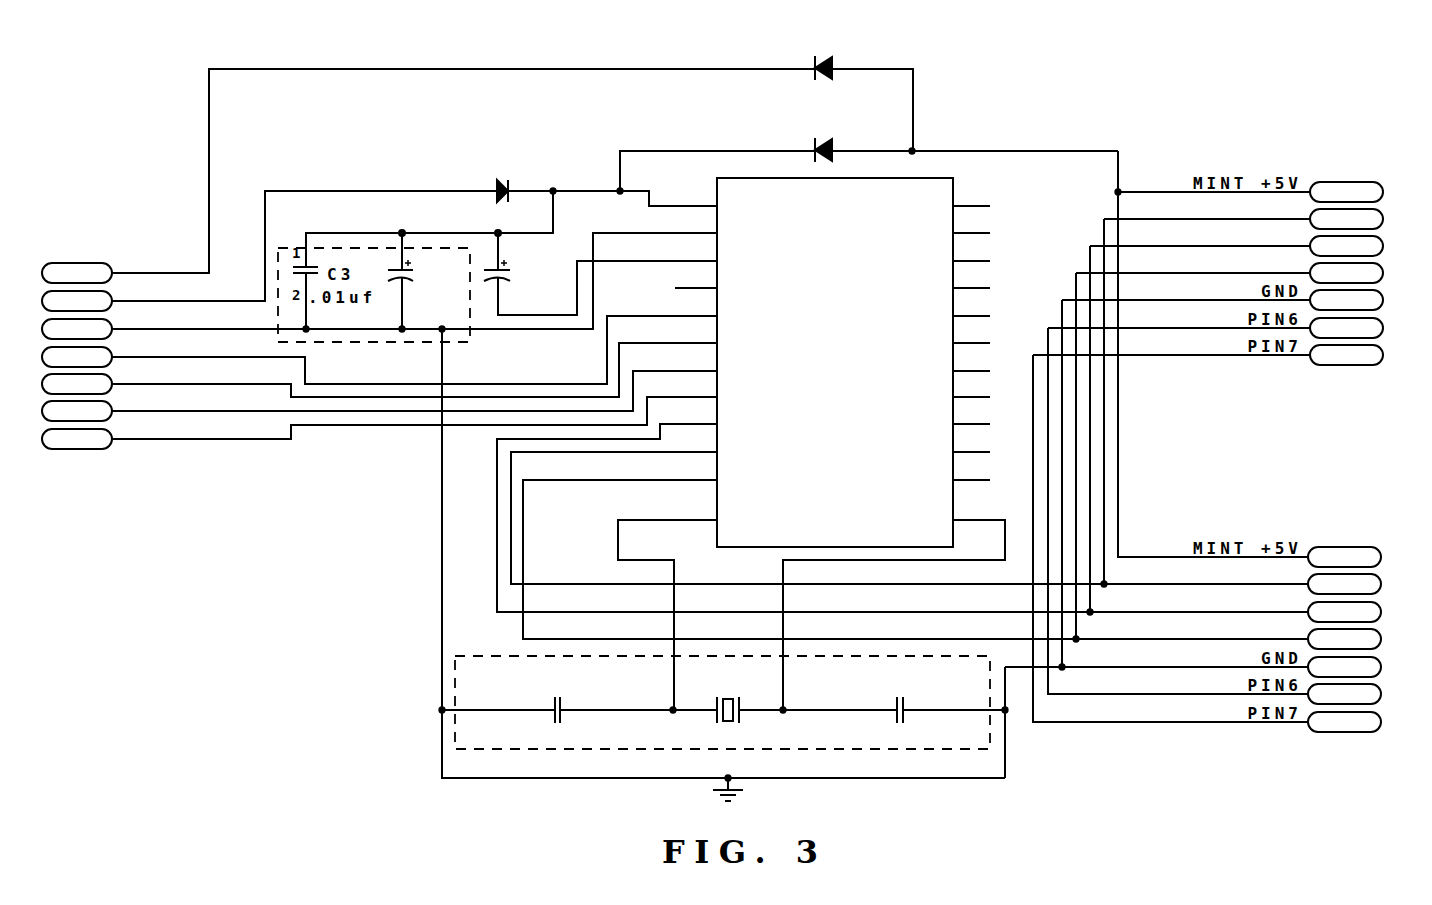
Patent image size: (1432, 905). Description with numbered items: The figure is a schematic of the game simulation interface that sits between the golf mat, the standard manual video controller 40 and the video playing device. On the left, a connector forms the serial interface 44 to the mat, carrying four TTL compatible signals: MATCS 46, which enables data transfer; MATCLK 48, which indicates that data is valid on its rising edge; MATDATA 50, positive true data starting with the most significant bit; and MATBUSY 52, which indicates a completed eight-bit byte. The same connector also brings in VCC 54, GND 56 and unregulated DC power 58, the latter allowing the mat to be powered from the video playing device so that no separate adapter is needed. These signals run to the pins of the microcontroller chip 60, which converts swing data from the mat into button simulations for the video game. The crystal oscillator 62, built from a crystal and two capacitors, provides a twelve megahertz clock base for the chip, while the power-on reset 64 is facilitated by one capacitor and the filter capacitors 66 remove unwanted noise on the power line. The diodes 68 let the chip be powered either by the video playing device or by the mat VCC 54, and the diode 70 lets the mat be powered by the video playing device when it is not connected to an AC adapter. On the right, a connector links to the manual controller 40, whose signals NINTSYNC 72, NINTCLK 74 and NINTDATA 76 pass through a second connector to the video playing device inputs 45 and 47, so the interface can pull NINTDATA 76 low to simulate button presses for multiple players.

The serial interface 44 is at (188, 362).
The unregulated DC power 58 is at (463, 171).
The VCC 54 is at (304, 246).
The GND 56 is at (558, 517).
The MATCS 46 is at (414, 350).
The MATCLK 48 is at (414, 370).
The MATDATA 50 is at (414, 391).
The MATBUSY 52 is at (414, 418).
The diode 70 is at (864, 90).
The diodes 68 is at (798, 169).
The filter capacitors 66 is at (426, 247).
The power-on reset 64 is at (600, 274).
The microcontroller chip 60 is at (811, 435).
The crystal oscillator 62 is at (455, 751).
The NINTCLK 74 is at (910, 394).
The NINTSYNC 72 is at (903, 421).
The NINTDATA 76 is at (916, 448).
The manual video controller 40 is at (1267, 299).
The video playing device input 1 45 is at (1202, 658).
The video playing device input 2 47 is at (1344, 639).